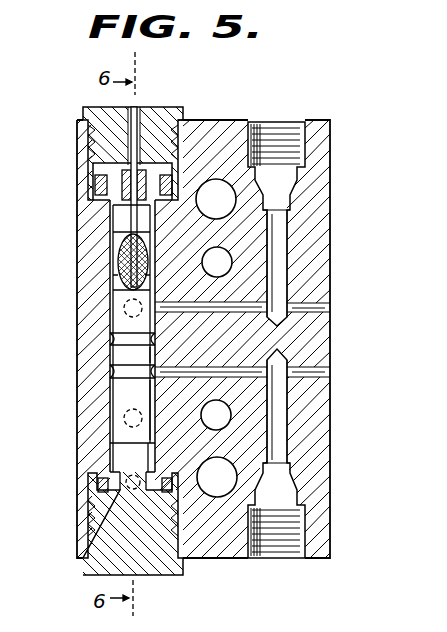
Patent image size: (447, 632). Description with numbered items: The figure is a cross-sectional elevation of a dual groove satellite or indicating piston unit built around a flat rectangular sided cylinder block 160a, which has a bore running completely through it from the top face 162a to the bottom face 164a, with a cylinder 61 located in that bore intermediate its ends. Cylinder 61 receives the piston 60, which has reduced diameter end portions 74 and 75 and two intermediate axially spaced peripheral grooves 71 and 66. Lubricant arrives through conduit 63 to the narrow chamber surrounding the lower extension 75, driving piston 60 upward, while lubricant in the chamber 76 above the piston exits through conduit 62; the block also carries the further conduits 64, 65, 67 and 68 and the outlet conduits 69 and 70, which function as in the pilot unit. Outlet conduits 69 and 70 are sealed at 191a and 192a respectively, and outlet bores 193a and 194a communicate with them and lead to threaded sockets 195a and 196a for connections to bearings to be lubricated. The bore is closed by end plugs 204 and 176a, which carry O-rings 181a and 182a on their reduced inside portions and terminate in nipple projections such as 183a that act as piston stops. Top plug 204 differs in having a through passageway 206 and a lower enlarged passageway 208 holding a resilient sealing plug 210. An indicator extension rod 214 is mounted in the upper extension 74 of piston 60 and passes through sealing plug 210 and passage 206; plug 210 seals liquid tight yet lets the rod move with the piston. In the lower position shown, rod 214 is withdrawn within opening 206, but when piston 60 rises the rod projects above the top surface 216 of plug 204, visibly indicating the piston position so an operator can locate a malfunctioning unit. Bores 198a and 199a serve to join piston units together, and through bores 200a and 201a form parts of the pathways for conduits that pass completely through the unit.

The top end plug 204 is at (110, 118).
The through passageway 206 is at (138, 107).
The top surface of plug 216 is at (173, 120).
The indicator extension rod 214 is at (127, 143).
The lower enlarged passageway 208 is at (94, 171).
The O-ring 181a is at (97, 189).
The sealing plug 210 is at (92, 197).
The top face 162a is at (220, 178).
The joining bore 198a is at (212, 118).
The threaded socket 195a is at (307, 125).
The cylinder block 160a is at (332, 160).
The outlet bore 193a is at (278, 246).
The seal 191a is at (332, 312).
The seal 192a is at (332, 376).
The outlet bore 194a is at (279, 430).
The threaded socket 196a is at (299, 542).
The bottom face 164a is at (238, 558).
The joining bore 199a is at (220, 565).
The bottom end plug 176a is at (157, 568).
The O-ring 182a is at (100, 492).
The conduit 63 is at (97, 507).
The lower reduced diameter end portion 75 is at (112, 459).
The conduit 65 is at (116, 427).
The conduit 68 is at (125, 419).
The peripheral groove 66 is at (110, 377).
The peripheral groove 71 is at (110, 351).
The conduit 67 is at (110, 339).
The piston 60 is at (110, 312).
The upper reduced diameter end portion 74 is at (122, 289).
The chamber 76 is at (118, 264).
The cylinder 61 is at (113, 239).
The conduit 62 is at (108, 225).
The conduit 64 is at (148, 247).
The nipple projection 183a is at (203, 339).
The through bore 200a is at (218, 278).
The outlet conduit 69 is at (186, 310).
The outlet conduit 70 is at (250, 360).
The through bore 201a is at (218, 402).